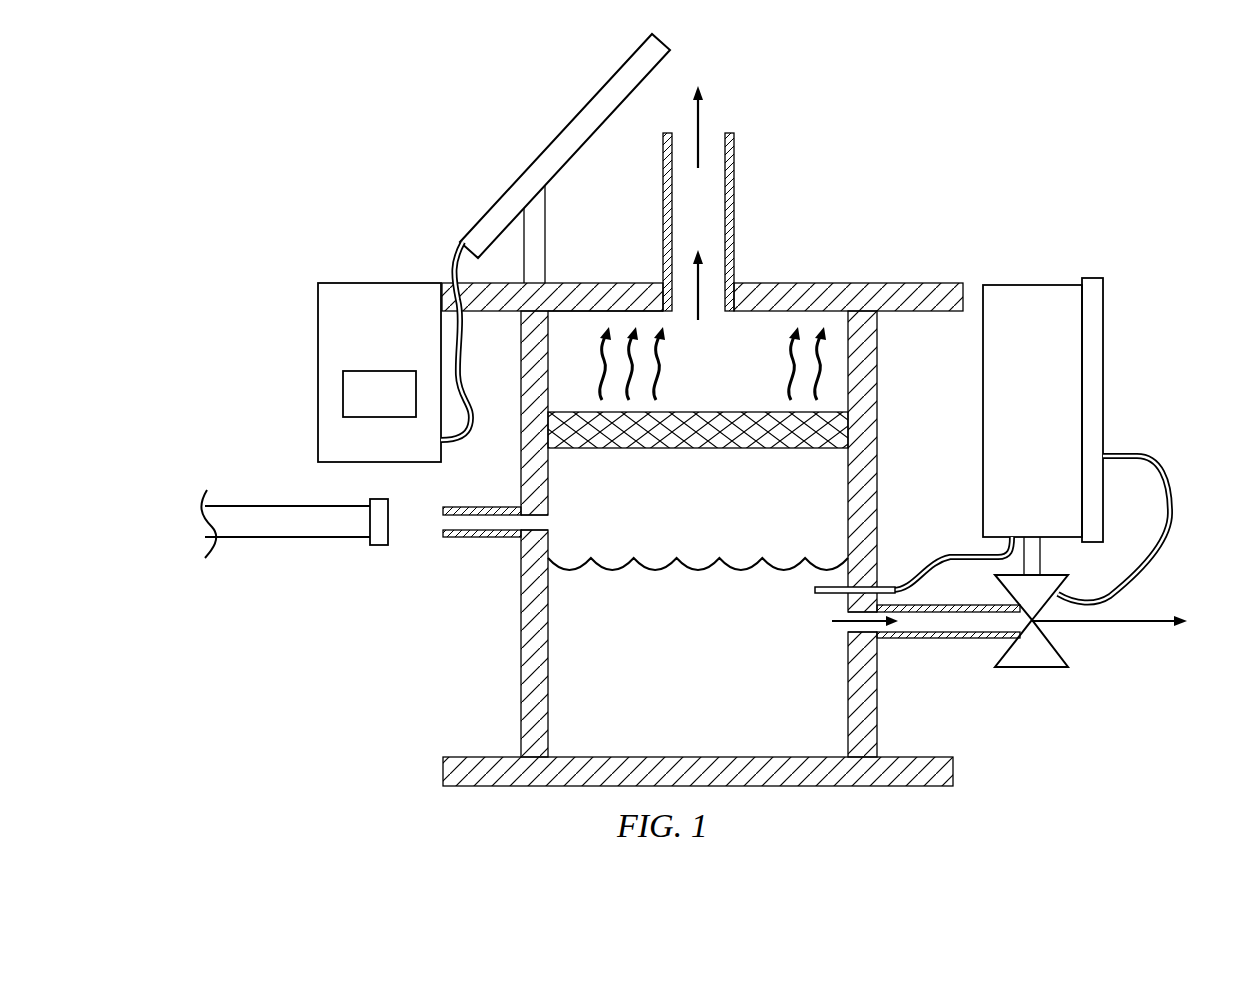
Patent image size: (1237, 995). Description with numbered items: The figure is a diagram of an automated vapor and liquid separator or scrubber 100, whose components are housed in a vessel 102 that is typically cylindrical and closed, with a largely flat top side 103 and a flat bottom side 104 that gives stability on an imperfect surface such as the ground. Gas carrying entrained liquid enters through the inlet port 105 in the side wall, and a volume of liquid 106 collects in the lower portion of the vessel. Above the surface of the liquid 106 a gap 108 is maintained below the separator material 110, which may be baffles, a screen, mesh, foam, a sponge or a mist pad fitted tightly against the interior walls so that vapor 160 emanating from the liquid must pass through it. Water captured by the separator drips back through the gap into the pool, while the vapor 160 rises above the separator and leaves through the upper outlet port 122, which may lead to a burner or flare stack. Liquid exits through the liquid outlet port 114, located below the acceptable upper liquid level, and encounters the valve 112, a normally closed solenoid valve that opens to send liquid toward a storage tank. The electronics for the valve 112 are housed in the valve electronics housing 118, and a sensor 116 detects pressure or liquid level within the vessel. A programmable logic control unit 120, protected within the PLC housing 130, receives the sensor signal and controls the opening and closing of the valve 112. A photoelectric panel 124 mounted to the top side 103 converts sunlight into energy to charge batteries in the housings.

The automated vapor and liquid separator or scrubber 100 is at (945, 838).
The vessel 102 is at (847, 256).
The top side 103 is at (636, 283).
The bottom side 104 is at (510, 787).
The inlet port 105 is at (478, 537).
The liquid 106 is at (720, 670).
The gap 108 is at (718, 528).
The separator material 110 is at (688, 403).
The valve 112 is at (1050, 667).
The liquid outlet port 114 is at (877, 660).
The sensor 116 is at (834, 593).
The valve electronics housing 118 is at (1114, 345).
The programmable logic control (PLC) unit 120 is at (343, 395).
The upper outlet port 122 is at (735, 183).
The photoelectric panel 124 is at (597, 90).
The PLC housing 130 is at (318, 297).
The vapor 160 is at (701, 118).